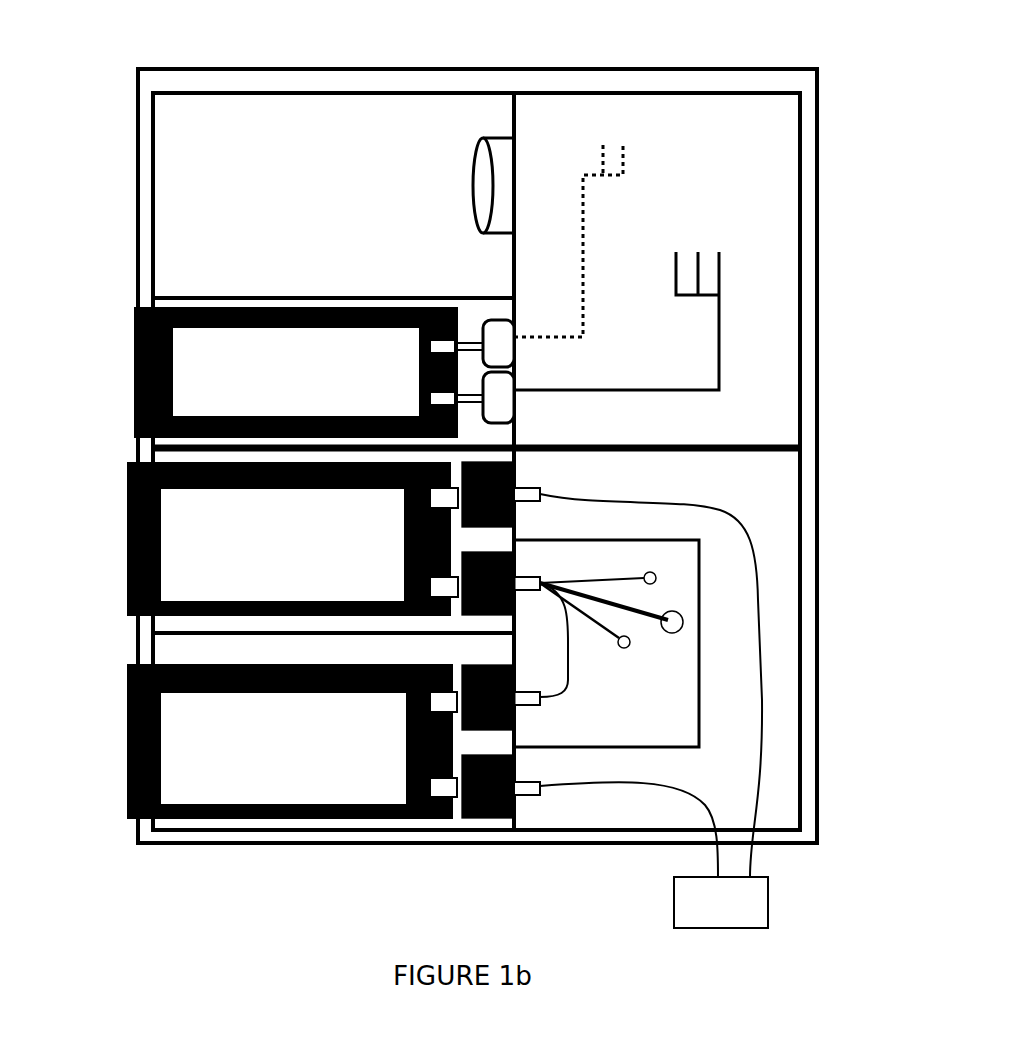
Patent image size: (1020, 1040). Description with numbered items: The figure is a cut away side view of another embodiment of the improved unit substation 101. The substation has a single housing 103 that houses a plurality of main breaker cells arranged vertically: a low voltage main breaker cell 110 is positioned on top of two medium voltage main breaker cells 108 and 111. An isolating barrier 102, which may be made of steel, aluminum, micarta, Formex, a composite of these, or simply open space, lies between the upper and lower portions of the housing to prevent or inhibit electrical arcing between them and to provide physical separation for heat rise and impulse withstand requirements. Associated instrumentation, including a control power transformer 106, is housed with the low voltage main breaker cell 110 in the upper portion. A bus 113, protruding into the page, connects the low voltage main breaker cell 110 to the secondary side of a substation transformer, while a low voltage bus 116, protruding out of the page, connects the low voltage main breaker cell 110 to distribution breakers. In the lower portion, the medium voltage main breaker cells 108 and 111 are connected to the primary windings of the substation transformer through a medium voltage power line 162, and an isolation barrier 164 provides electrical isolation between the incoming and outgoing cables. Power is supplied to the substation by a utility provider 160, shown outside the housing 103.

The improved unit substation 101 is at (203, 931).
The isolating barrier 102 is at (750, 445).
The single housing 103 is at (817, 641).
The control power transformer 106 is at (471, 186).
The medium voltage main breaker cell 108 is at (145, 541).
The low voltage main breaker cell 110 is at (145, 380).
The medium voltage main breaker cell 111 is at (132, 748).
The bus 113 is at (625, 155).
The low voltage bus 116 is at (719, 281).
The utility provider 160 is at (768, 897).
The medium voltage power line 162 is at (683, 607).
The isolation barrier 164 is at (699, 550).